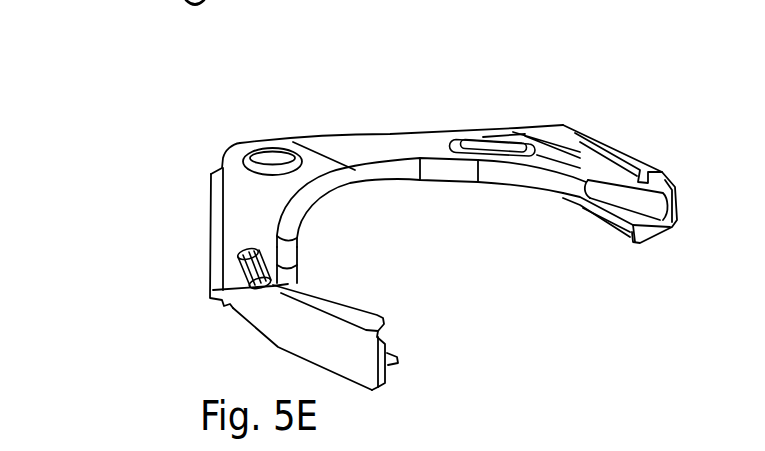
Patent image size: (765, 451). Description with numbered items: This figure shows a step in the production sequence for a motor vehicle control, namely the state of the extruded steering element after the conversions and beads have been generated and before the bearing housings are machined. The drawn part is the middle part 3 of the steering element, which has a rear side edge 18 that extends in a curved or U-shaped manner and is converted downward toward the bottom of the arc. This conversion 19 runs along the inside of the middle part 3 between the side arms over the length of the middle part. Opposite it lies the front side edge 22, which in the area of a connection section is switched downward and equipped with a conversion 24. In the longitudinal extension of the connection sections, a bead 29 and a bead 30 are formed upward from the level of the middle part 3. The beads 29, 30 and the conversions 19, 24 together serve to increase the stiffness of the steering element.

The middle part 3 is at (393, 145).
The rear side edge 18 is at (358, 216).
The conversion 19 is at (407, 178).
The front side edge 22 is at (352, 113).
The conversion 24 is at (212, 230).
The bead 29 is at (488, 139).
The bead 30 is at (245, 270).